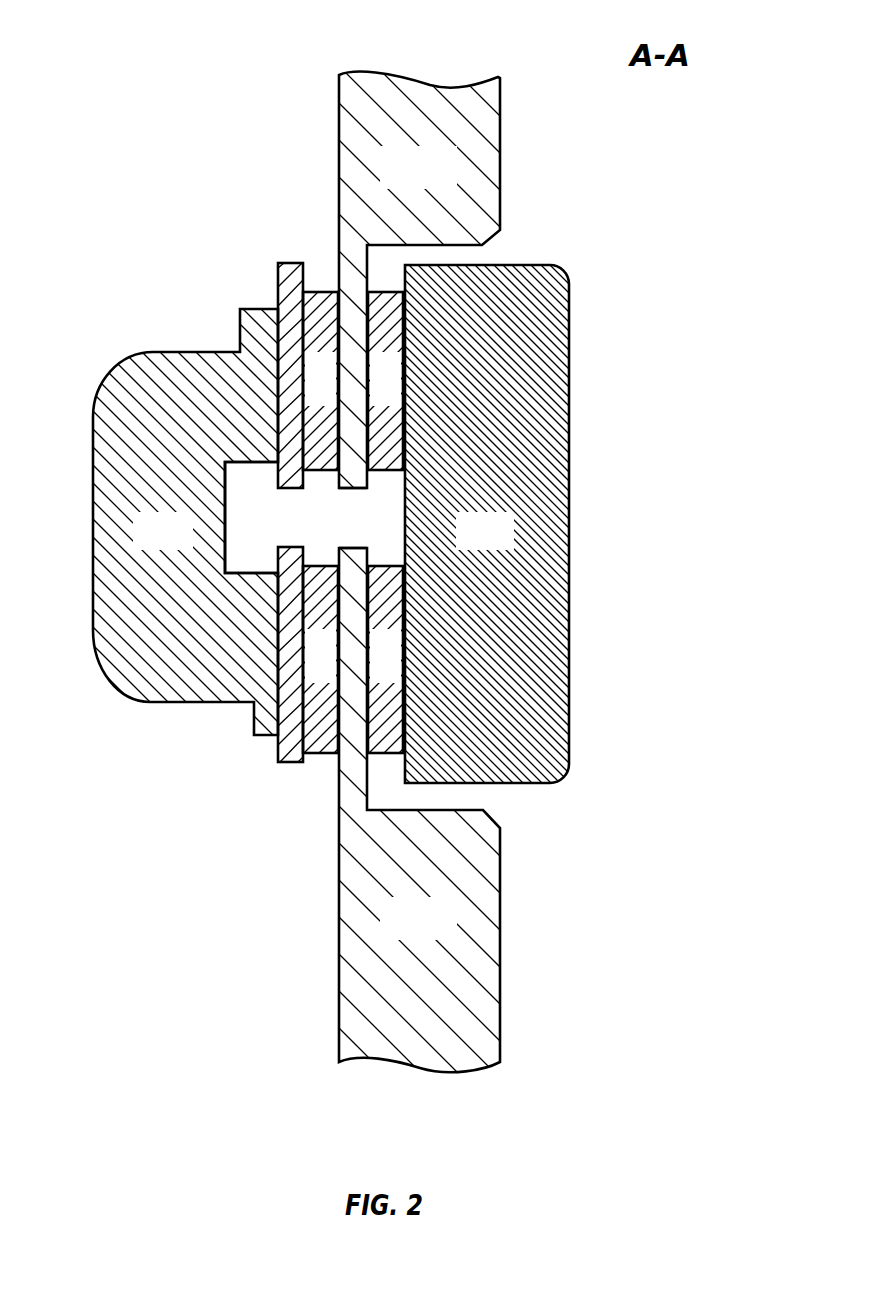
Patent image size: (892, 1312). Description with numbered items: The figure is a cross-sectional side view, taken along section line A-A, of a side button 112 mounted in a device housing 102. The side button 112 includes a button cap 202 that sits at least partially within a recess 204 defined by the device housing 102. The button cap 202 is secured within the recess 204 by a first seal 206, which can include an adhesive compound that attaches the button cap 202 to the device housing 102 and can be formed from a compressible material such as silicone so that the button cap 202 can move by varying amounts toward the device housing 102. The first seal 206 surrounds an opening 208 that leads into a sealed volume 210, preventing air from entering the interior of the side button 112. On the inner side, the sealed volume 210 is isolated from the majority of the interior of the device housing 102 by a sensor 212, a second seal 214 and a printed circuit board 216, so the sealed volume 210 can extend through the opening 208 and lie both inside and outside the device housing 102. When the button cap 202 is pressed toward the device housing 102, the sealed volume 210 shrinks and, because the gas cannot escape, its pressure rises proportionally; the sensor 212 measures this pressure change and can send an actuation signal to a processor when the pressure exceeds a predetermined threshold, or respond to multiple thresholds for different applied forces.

The device housing 102 is at (434, 178).
The side button 112 is at (98, 232).
The button cap 202 is at (501, 542).
The recess 204 is at (488, 255).
The first seal 206 is at (385, 522).
The opening 208 is at (353, 518).
The sealed volume 210 is at (283, 526).
The sensor 212 is at (178, 542).
The second seal 214 is at (320, 522).
The printed circuit board 216 is at (295, 262).